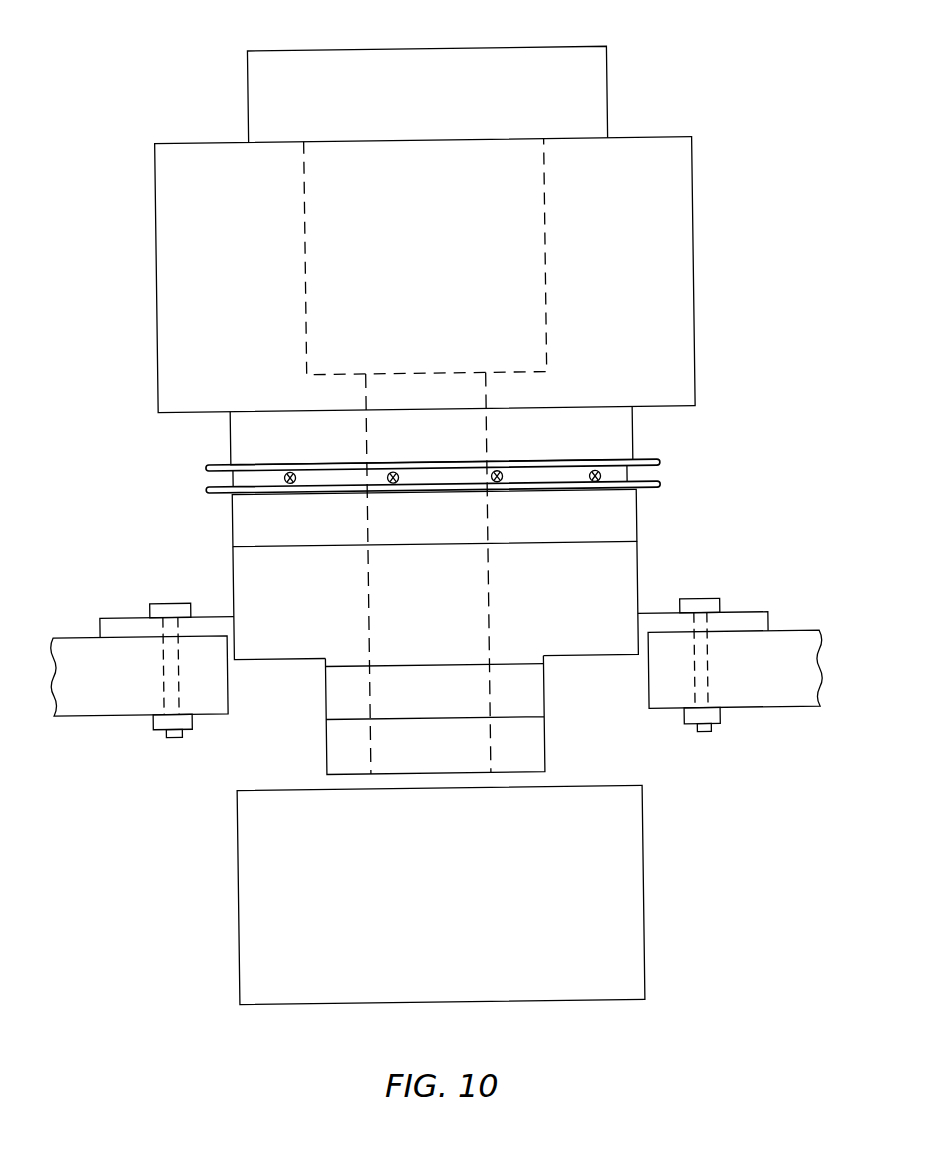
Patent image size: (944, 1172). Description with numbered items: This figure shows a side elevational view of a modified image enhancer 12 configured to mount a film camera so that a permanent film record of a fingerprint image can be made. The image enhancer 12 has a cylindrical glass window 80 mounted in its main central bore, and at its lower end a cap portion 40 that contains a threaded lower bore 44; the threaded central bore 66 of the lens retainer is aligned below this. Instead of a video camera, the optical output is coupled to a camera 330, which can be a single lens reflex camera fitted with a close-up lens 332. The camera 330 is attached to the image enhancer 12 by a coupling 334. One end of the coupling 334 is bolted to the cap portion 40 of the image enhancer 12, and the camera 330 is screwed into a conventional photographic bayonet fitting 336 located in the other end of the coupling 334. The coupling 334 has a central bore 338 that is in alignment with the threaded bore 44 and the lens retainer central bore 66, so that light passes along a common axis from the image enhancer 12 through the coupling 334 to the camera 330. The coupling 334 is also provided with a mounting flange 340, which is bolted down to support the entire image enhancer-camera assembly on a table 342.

The image enhancer 12 is at (706, 58).
The cylindrical glass window 80 is at (550, 256).
The threaded lower bore 44 is at (471, 437).
The threaded central bore 66 is at (380, 517).
The cap portion 40 is at (640, 521).
The coupling 334 is at (640, 585).
The central bore 338 is at (490, 573).
The photographic bayonet fitting 336 is at (542, 661).
The close-up lens 332 is at (543, 698).
The camera 330 is at (640, 873).
The mounting flange 340 is at (767, 617).
The table 342 is at (763, 711).